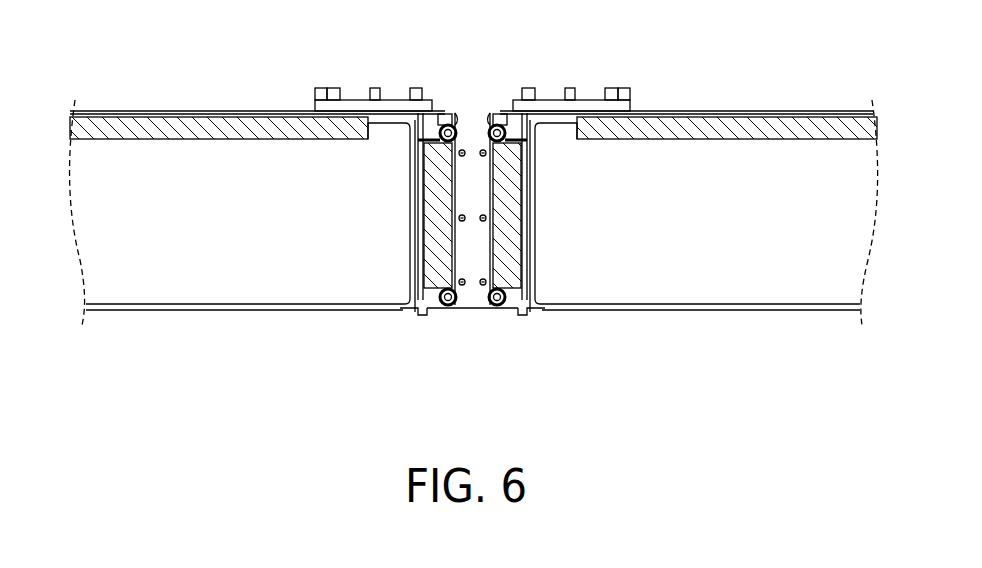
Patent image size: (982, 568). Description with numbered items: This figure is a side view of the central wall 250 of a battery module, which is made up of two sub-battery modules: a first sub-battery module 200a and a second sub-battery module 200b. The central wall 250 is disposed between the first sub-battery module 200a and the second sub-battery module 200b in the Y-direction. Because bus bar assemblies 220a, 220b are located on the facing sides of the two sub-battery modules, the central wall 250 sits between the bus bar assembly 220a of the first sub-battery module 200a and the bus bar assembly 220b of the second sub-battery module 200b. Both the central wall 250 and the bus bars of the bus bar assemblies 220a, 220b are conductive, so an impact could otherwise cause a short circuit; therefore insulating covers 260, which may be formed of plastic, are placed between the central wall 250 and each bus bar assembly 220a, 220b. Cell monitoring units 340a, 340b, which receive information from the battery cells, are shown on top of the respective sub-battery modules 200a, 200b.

The first sub-battery module 200a is at (245, 322).
The second sub-battery module 200b is at (694, 322).
The bus bar assembly of the first sub-battery module 220a is at (412, 299).
The bus bar assembly of the second sub-battery module 220b is at (533, 299).
The central wall 250 is at (472, 306).
The insulating cover 260 is at (435, 283).
The cell monitoring unit 340a is at (358, 90).
The cell monitoring unit 340b is at (587, 90).